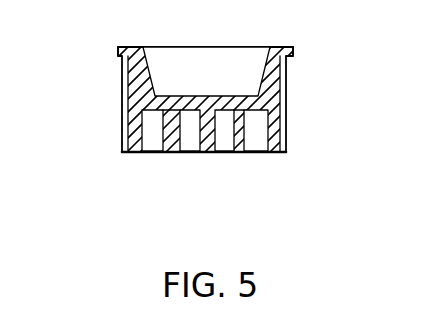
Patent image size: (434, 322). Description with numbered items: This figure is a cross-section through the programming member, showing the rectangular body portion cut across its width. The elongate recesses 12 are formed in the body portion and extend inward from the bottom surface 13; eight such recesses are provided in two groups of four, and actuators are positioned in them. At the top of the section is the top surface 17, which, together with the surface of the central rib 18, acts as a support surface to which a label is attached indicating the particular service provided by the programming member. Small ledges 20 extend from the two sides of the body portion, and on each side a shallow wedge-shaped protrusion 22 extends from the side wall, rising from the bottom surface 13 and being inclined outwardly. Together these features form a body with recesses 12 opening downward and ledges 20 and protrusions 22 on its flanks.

The elongate recesses 12 is at (228, 140).
The bottom surface 13 is at (173, 155).
The top surface 17 is at (130, 47).
The central rib 18 is at (213, 53).
The small ledges 20 is at (118, 53).
The wedge-shaped protrusion 22 is at (122, 107).